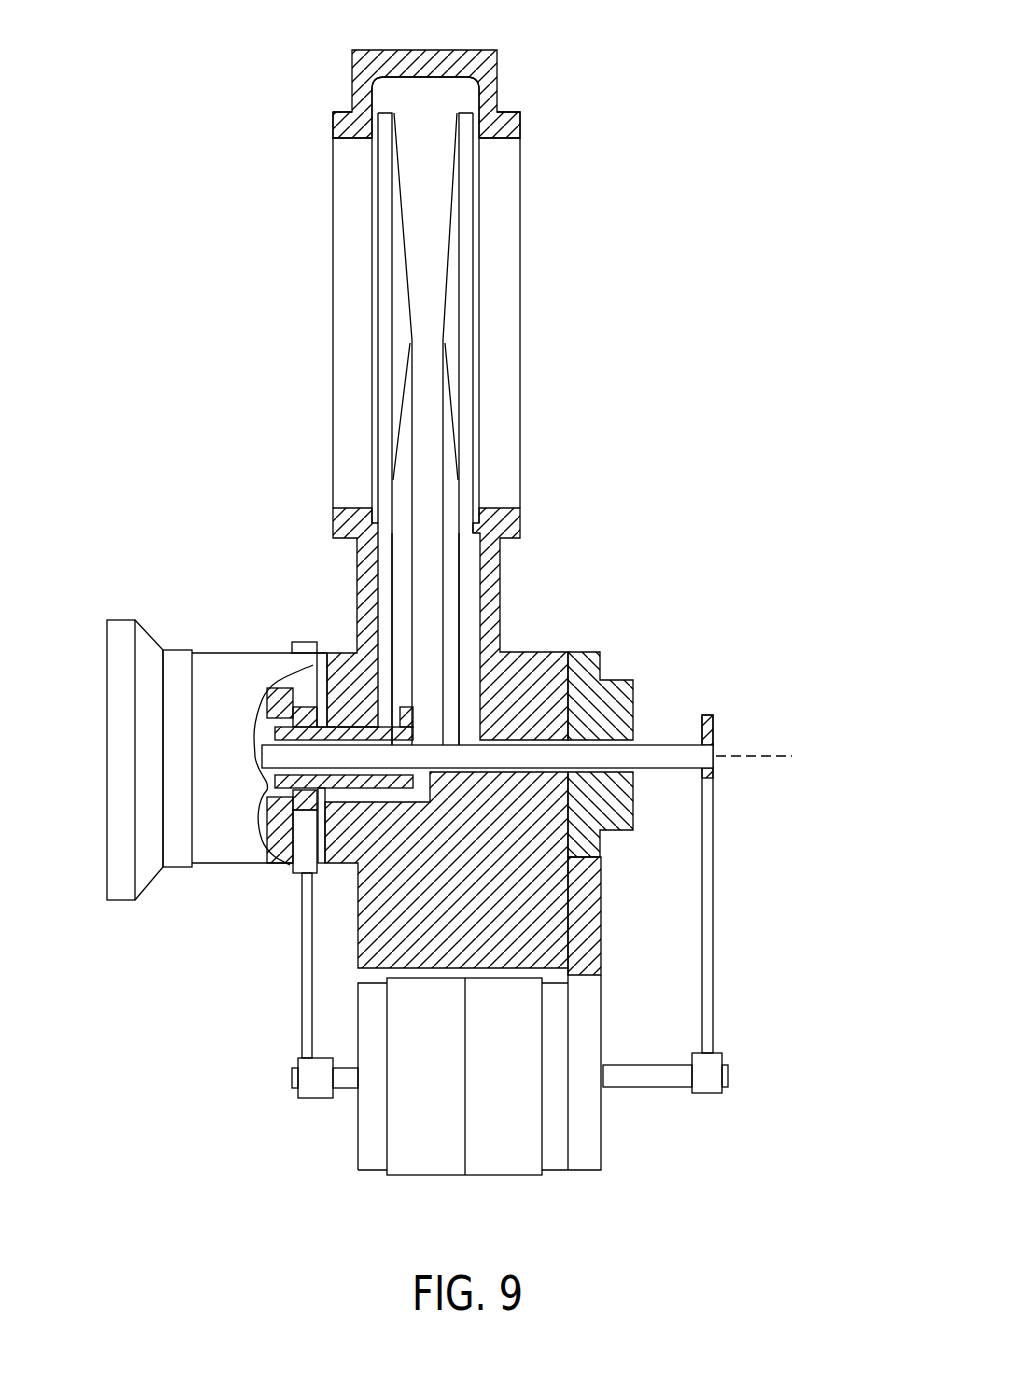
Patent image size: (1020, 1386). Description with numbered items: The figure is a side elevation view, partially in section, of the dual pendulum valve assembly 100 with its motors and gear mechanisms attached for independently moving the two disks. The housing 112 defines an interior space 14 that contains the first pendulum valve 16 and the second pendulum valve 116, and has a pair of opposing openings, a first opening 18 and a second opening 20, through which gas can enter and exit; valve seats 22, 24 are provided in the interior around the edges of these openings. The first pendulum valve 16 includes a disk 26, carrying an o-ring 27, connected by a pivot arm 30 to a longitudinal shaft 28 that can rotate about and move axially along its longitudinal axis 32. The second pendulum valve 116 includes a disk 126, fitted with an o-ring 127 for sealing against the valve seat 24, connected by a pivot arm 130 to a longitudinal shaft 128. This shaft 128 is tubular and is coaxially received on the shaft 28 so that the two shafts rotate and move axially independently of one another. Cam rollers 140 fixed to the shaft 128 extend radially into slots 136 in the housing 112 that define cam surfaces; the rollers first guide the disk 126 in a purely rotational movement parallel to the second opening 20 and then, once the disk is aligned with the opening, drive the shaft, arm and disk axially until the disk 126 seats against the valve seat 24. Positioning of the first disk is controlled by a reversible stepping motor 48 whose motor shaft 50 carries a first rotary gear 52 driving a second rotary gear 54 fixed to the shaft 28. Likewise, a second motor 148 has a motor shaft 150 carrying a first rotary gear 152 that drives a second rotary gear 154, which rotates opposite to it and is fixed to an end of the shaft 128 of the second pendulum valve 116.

The dual pendulum valve assembly 100 is at (258, 352).
The housing 112 is at (483, 50).
The interior space 14 is at (438, 121).
The valve seat 24 is at (370, 118).
The valve seat 22 is at (496, 112).
The disk 126 is at (372, 167).
The disk 26 is at (475, 158).
The second pendulum valve 116 is at (368, 216).
The pendulum valve 16 is at (488, 205).
The o-ring 127 is at (370, 277).
The o-ring 27 is at (478, 267).
The second opening 20 is at (357, 508).
The first opening 18 is at (498, 508).
The pivot arm 130 is at (400, 573).
The pivot arm 30 is at (455, 573).
The cam rollers 140 is at (298, 643).
The slots 136 is at (322, 652).
The longitudinal shaft 128 is at (287, 795).
The longitudinal shaft 28 is at (660, 748).
The longitudinal axis 32 is at (770, 750).
The second rotary gear 54 is at (714, 875).
The second rotary gear 154 is at (302, 1008).
The first rotary gear 152 is at (307, 1095).
The motor shaft 150 is at (346, 1090).
The first rotary gear 52 is at (728, 1057).
The motor shaft 50 is at (655, 1078).
The second motor 148 is at (425, 1170).
The motor 48 is at (505, 1170).